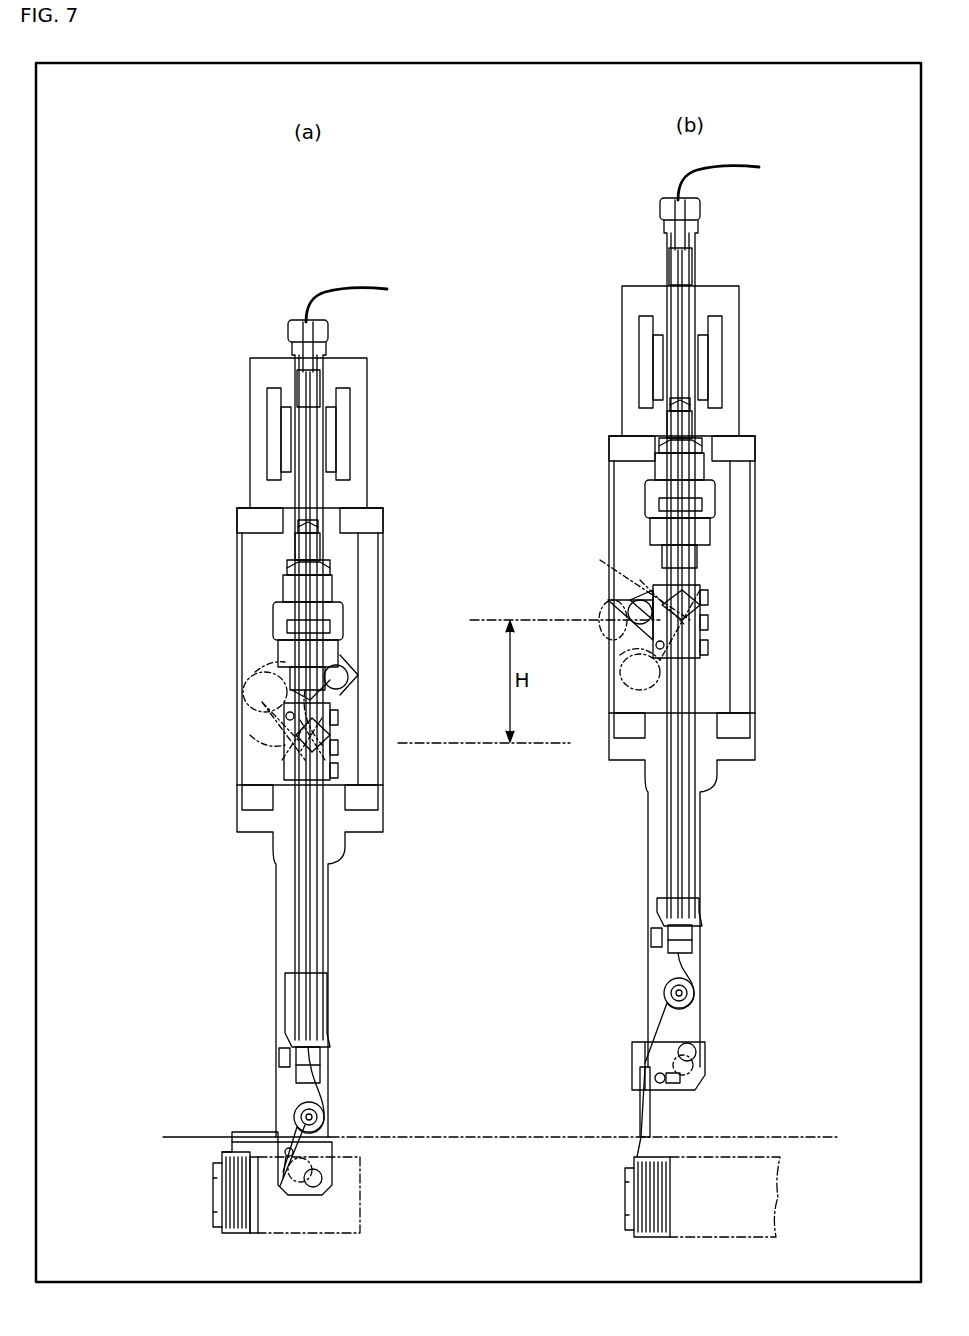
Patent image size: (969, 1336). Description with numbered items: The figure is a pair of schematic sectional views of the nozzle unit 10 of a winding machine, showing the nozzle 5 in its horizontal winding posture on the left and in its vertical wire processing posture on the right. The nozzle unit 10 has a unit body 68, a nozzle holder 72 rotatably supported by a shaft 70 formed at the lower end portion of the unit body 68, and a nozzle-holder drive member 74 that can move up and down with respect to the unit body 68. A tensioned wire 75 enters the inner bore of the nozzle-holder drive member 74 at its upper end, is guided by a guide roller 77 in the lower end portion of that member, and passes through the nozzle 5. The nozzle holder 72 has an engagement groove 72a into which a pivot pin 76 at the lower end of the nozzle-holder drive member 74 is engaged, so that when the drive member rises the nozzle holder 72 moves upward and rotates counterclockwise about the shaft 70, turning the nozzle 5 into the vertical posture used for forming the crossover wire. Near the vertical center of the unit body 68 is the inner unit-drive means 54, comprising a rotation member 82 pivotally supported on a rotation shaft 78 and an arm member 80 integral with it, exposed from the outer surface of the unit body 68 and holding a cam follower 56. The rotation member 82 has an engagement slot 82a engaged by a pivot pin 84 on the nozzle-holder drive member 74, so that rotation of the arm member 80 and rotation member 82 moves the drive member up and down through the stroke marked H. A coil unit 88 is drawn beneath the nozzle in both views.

The nozzle unit 10 is at (188, 504).
The nozzle 5 is at (254, 1132).
The inner unit-drive means 54 is at (250, 736).
The cam follower 56 is at (345, 662).
The unit body 68 is at (240, 590).
The shaft 70 is at (290, 1166).
The nozzle holder 72 is at (340, 1160).
The engagement groove 72a is at (305, 1160).
The nozzle-holder drive member 74 is at (325, 984).
The wire 75 is at (314, 291).
The pivot pin 76 is at (325, 1181).
The guide roller 77 is at (318, 1108).
The rotation shaft 78 is at (286, 716).
The arm member 80 is at (335, 698).
The rotation member 82 is at (258, 683).
The engagement slot 82a is at (300, 718).
The pivot pin 84 is at (325, 745).
The coil unit 88 is at (213, 1198).